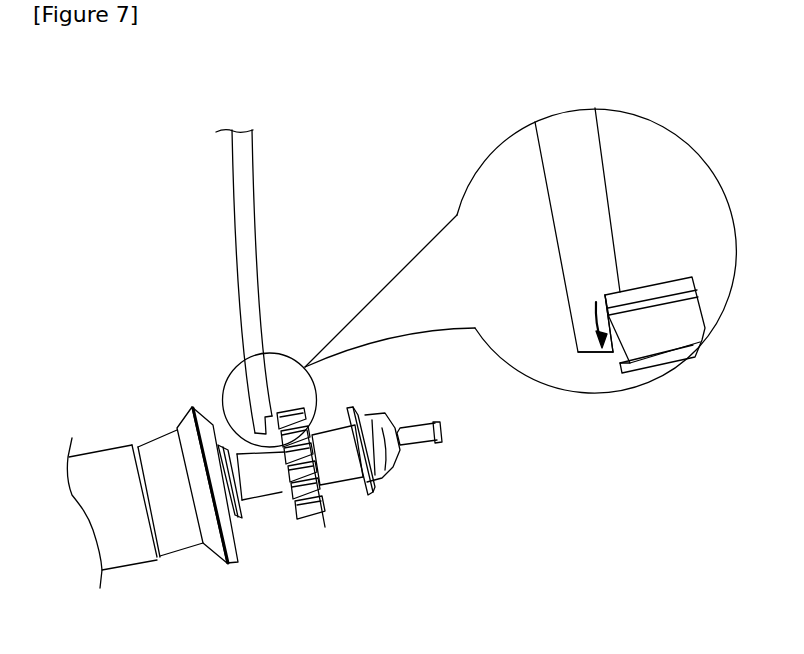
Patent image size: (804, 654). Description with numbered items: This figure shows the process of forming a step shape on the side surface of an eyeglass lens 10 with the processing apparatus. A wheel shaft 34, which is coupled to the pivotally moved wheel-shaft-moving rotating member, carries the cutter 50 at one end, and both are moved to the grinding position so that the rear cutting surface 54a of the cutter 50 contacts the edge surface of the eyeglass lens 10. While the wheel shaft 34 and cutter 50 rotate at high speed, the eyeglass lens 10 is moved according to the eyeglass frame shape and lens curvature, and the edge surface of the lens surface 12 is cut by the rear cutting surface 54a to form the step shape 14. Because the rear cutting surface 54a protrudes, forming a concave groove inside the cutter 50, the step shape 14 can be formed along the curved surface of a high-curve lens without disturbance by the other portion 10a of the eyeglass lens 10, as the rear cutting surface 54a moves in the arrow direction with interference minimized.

The eyeglass lens 10 is at (237, 298).
The other portion of the eyeglass lens 10a is at (583, 337).
The lens surface 12 is at (254, 263).
The step shape 14 is at (620, 287).
The wheel shaft 34 is at (255, 487).
The cutter 50 is at (313, 502).
The rear cutting surface 54a is at (610, 313).